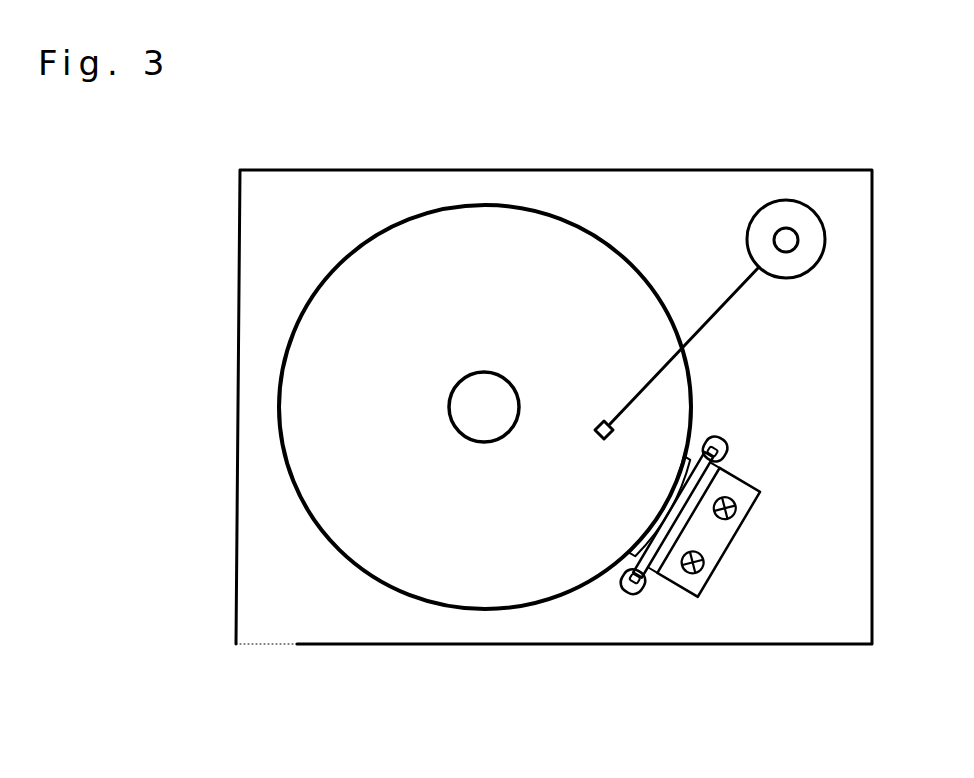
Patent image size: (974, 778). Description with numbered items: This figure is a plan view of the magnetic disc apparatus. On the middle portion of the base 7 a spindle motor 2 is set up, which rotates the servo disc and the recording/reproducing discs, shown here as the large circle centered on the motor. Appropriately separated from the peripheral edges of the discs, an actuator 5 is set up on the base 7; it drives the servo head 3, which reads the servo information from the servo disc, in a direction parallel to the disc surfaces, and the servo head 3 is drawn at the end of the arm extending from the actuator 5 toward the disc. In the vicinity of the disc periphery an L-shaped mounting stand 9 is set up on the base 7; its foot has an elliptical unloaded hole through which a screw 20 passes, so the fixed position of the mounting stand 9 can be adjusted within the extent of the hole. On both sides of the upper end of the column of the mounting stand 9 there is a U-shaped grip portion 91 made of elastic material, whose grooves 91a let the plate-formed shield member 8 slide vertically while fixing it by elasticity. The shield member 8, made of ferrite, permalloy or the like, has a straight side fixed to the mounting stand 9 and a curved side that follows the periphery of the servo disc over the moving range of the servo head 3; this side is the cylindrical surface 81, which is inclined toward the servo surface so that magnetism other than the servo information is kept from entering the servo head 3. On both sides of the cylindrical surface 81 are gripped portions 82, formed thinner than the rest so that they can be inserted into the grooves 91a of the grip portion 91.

The spindle motor 2 is at (495, 372).
The servo head 3 is at (606, 422).
The actuator 5 is at (791, 201).
The base 7 is at (352, 169).
The shield member 8 is at (630, 553).
The mounting stand 9 is at (725, 461).
The screw 20 is at (706, 562).
The cylindrical surface 81 is at (637, 545).
The gripped portions 82 is at (725, 465).
The grip portion 91 is at (714, 437).
The grooves 91a is at (725, 443).